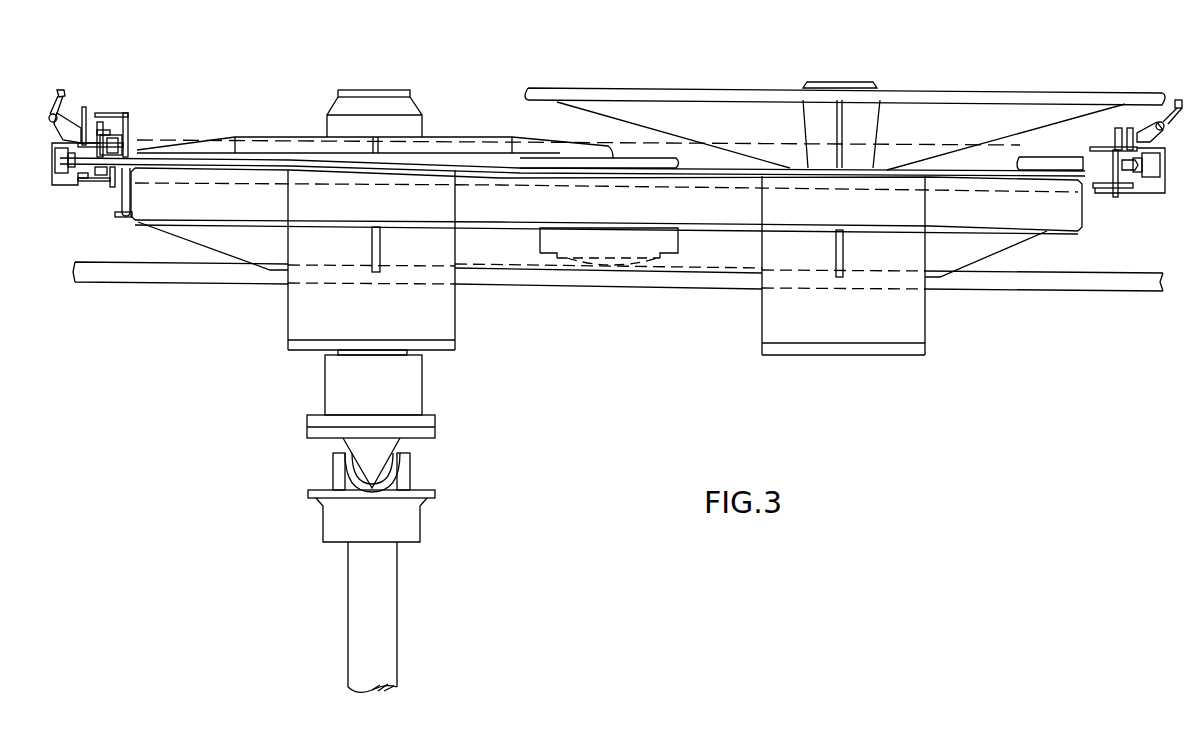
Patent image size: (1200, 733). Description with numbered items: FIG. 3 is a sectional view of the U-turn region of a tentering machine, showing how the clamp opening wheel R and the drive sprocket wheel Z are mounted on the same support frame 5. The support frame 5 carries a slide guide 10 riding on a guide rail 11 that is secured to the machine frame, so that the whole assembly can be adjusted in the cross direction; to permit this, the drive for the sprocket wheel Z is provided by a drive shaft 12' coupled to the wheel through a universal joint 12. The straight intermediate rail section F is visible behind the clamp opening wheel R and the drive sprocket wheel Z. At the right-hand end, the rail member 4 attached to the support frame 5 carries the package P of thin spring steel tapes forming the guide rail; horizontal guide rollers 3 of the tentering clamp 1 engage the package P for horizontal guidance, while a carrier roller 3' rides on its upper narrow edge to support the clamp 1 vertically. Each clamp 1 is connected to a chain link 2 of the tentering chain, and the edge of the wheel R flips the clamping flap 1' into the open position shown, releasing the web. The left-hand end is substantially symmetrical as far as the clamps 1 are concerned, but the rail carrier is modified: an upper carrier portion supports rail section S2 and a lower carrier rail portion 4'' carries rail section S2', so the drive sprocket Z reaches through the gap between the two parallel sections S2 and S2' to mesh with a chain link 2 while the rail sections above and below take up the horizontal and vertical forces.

The tentering clamp 1 is at (44, 110).
The clamping flap 1' is at (1166, 105).
The chain link 2 is at (65, 165).
The horizontal guide roller 3 is at (600, 140).
The carrier roller 3' is at (613, 136).
The rail member 4 is at (572, 166).
The lower carrier rail portion 4'' is at (129, 207).
The rail section S2 is at (140, 122).
The rail section S2' is at (81, 195).
The drive sprocket wheel Z is at (462, 163).
The intermediate rail section F is at (610, 150).
The clamp opening wheel R is at (672, 92).
The package P is at (1117, 197).
The support frame 5 is at (465, 224).
The slide guide 10 is at (610, 260).
The guide rail 11 is at (958, 282).
The universal joint 12 is at (568, 356).
The drive shaft 12' is at (394, 617).